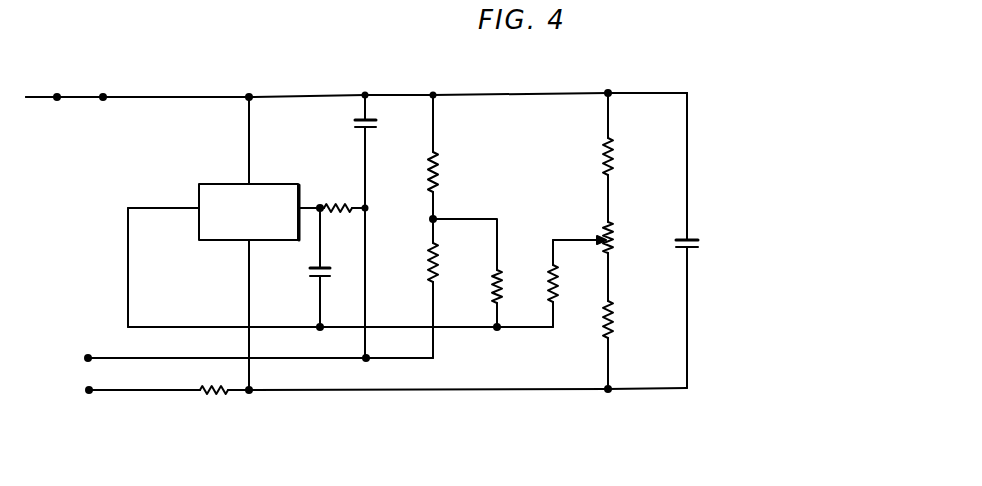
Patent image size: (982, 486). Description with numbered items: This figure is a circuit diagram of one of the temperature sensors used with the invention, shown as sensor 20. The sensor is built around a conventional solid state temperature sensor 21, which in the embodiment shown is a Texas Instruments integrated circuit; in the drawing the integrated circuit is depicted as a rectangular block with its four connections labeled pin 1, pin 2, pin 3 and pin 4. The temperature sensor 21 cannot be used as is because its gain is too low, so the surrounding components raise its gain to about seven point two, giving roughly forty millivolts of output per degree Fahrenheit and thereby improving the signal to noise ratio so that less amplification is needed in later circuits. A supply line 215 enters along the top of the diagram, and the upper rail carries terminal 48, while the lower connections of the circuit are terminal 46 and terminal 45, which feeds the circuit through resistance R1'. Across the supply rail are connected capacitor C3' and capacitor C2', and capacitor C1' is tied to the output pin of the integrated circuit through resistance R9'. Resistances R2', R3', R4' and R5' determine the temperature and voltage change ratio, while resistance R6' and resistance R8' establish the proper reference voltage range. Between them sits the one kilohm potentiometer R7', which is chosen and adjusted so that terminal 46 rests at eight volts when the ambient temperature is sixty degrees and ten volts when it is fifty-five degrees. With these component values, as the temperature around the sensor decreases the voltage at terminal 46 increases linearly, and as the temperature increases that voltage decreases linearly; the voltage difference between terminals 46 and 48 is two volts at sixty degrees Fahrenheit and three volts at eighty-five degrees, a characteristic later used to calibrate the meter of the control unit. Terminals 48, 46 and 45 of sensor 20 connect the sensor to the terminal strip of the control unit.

The power supply line 215 is at (57, 95).
The terminal 48 is at (103, 95).
The sensor 20 is at (724, 118).
The solid state temperature sensor 21 is at (256, 226).
The terminal 46 is at (87, 356).
The terminal 45 is at (89, 390).
The pin 1 of IC 21 1 is at (305, 200).
The pin 2 of IC 21 2 is at (187, 200).
The pin 3 of IC 21 3 is at (240, 175).
The pin 4 of IC 21 4 is at (239, 251).
The resistance R1' is at (214, 404).
The resistance R2' is at (449, 169).
The resistance R3' is at (449, 300).
The resistance R4' is at (480, 273).
The resistance R5' is at (566, 283).
The resistance R6' is at (623, 157).
The potentiometer R7' is at (598, 261).
The resistance R8' is at (623, 345).
The resistance R9' is at (342, 197).
The capacitor C1' is at (335, 267).
The capacitor C2' is at (702, 244).
The capacitor C3' is at (380, 228).